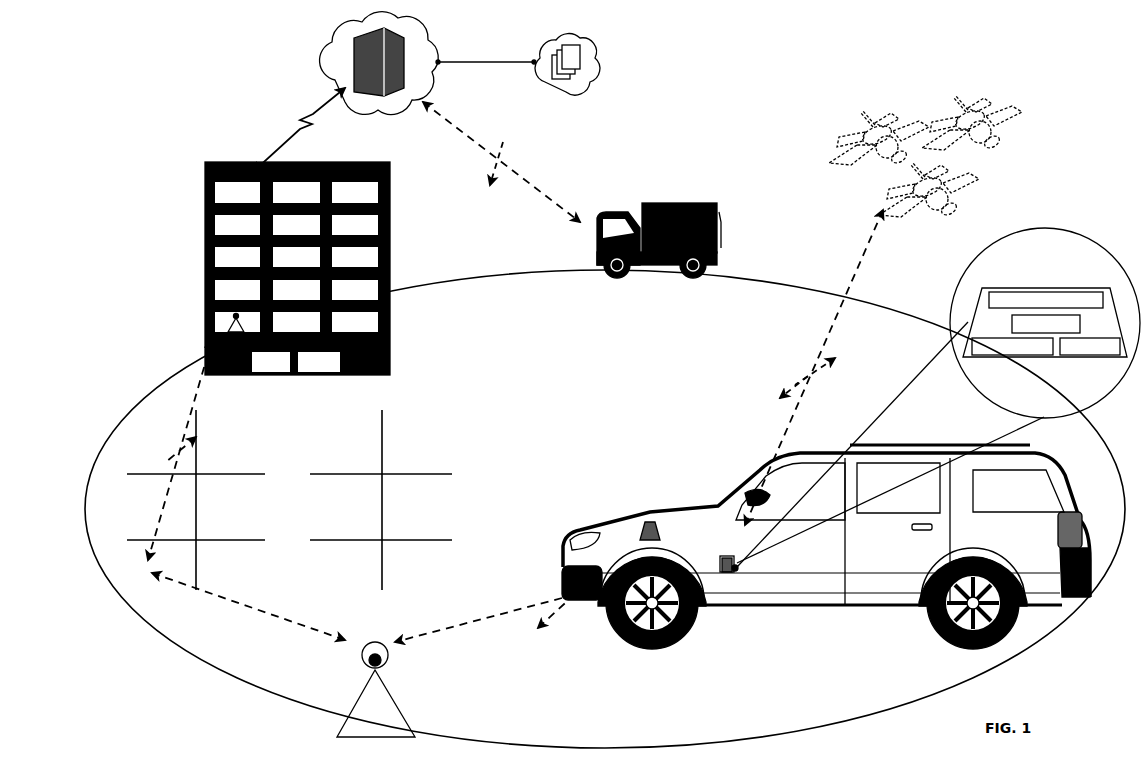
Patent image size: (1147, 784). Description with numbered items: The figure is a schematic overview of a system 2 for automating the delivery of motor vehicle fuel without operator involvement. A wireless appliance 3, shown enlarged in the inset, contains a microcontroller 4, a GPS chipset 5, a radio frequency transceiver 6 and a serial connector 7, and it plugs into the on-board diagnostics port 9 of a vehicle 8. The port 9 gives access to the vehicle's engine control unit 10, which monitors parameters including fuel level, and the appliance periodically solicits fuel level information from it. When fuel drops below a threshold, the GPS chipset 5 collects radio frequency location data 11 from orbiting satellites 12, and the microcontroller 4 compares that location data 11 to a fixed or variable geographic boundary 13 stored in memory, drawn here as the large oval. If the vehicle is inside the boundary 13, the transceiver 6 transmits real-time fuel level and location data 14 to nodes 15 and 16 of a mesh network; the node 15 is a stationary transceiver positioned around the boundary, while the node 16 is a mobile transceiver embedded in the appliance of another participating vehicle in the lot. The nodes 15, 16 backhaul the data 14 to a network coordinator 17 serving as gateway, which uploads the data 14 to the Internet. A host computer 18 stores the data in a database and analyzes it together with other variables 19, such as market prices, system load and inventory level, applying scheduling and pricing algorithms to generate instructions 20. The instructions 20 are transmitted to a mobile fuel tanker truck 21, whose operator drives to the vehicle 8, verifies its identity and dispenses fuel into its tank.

The system 2 is at (785, 72).
The wireless appliance 3 is at (931, 434).
The microcontroller 4 is at (1000, 360).
The GPS chipset 5 is at (1085, 360).
The radio frequency transceiver 6 is at (1083, 324).
The serial connector 7 is at (1030, 286).
The vehicle 8 is at (870, 620).
The on-board diagnostics (OBD-II) port 9 is at (720, 552).
The engine control unit 10 is at (650, 520).
The radio frequency location data 11 is at (772, 375).
The orbiting satellites 12 is at (1018, 120).
The geographic boundary 13 is at (502, 282).
The real-time fuel level and location data 14 is at (272, 135).
The node 15 is at (352, 695).
The node 16 is at (146, 585).
The network coordinator 17 is at (222, 322).
The host computer 18 is at (315, 60).
The other variables 19 is at (600, 62).
The instructions 20 is at (530, 160).
The mobile fuel tanker truck 21 is at (678, 200).